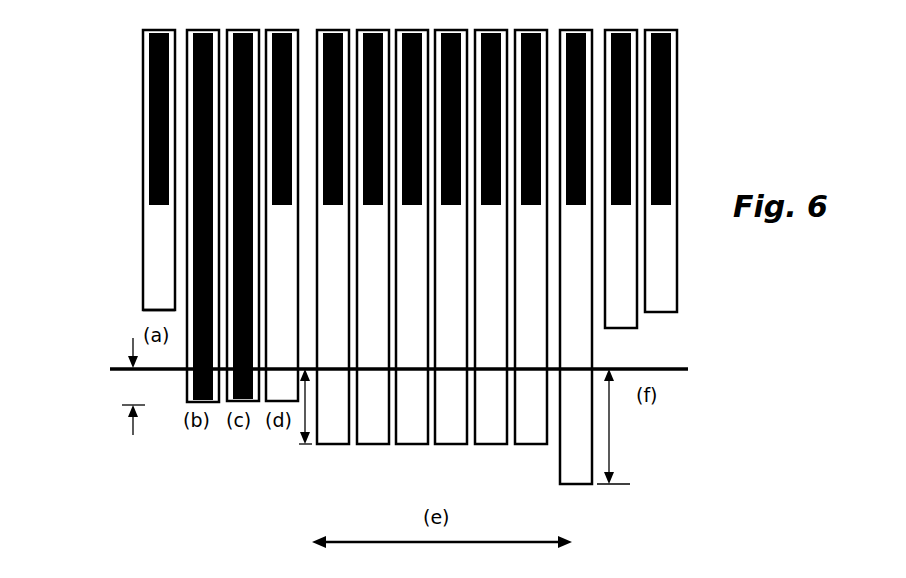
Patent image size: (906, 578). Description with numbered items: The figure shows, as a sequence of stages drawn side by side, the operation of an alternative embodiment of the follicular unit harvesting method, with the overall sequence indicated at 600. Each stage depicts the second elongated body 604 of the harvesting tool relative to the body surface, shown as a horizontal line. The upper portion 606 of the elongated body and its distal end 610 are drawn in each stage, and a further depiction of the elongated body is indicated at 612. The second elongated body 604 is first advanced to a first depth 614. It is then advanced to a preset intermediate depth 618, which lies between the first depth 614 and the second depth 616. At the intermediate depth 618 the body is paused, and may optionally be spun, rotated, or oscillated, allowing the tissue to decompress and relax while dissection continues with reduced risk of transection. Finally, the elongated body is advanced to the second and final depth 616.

The test pattern of gate structures 600 is at (700, 90).
The second elongated body 604 is at (142, 253).
The gate electrode region 606 is at (152, 95).
The line end 610 is at (143, 310).
The line 612 is at (658, 256).
The first depth 614 is at (133, 386).
The second depth 616 is at (624, 426).
The intermediate depth 618 is at (303, 428).